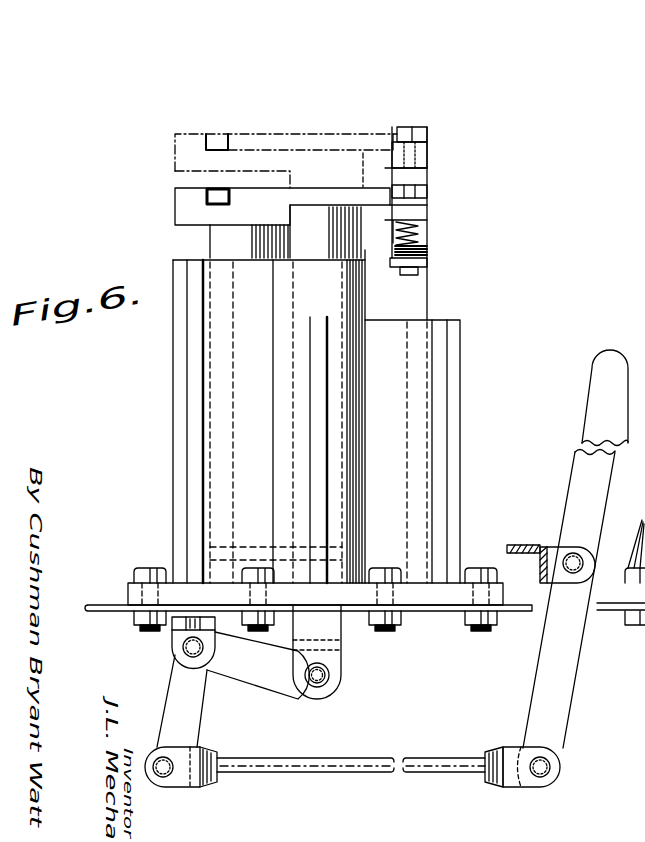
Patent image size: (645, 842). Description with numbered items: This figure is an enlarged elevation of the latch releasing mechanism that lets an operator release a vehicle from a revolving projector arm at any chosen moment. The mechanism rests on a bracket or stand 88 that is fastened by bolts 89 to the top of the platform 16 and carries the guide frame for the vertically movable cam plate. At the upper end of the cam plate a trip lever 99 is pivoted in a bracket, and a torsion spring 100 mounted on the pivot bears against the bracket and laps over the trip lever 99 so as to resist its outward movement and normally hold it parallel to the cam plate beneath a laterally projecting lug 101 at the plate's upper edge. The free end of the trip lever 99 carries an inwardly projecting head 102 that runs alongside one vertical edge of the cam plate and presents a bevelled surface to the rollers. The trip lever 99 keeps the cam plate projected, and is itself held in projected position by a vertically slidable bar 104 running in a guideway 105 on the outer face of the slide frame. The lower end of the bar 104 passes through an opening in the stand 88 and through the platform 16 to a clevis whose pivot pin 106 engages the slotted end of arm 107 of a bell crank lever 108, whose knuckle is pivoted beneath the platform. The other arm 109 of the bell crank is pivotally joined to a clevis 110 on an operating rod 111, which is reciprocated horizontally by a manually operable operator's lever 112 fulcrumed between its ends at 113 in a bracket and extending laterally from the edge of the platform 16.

The platform 16 is at (117, 597).
The bracket or stand 88 is at (447, 600).
The bolts 89 is at (473, 573).
The trip lever 99 is at (370, 247).
The torsion spring 100 is at (428, 229).
The laterally projecting lug 101 is at (207, 190).
The inwardly projecting head 102 is at (184, 206).
The vertically slidable bar 104 is at (300, 307).
The guideway 105 is at (293, 438).
The pivot pin 106 is at (320, 693).
The arm of bell crank lever 107 is at (277, 677).
The bell crank lever 108 is at (180, 668).
The arm of bell crank lever 109 is at (168, 697).
The clevis 110 is at (180, 788).
The operating rod 111 is at (340, 775).
The operator's lever 112 is at (547, 697).
The fulcrum 113 is at (583, 553).